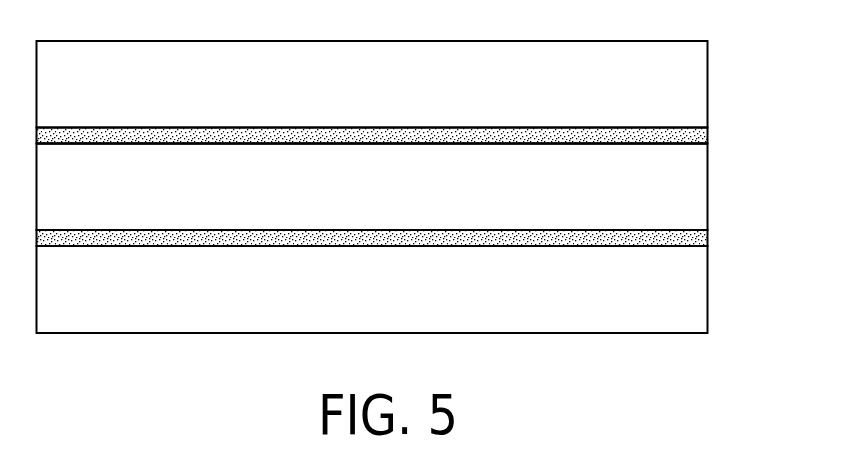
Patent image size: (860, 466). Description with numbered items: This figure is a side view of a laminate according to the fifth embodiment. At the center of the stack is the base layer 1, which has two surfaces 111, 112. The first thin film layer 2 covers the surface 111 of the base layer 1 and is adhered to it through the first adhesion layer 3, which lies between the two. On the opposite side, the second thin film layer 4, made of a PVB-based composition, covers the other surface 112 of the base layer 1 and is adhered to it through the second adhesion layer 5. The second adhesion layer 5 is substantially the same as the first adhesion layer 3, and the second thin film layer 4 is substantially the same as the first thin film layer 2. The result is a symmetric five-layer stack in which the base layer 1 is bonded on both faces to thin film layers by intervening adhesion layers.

The first thin film layer 2 is at (708, 58).
The first adhesion layer 3 is at (708, 135).
The surface 111 is at (667, 145).
The base layer 1 is at (708, 193).
The surface 112 is at (660, 230).
The second adhesion layer 5 is at (708, 240).
The second thin film layer 4 is at (708, 293).